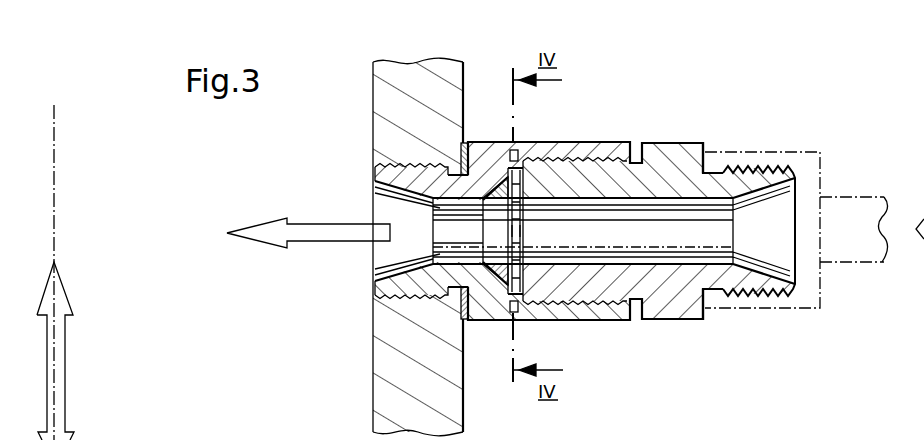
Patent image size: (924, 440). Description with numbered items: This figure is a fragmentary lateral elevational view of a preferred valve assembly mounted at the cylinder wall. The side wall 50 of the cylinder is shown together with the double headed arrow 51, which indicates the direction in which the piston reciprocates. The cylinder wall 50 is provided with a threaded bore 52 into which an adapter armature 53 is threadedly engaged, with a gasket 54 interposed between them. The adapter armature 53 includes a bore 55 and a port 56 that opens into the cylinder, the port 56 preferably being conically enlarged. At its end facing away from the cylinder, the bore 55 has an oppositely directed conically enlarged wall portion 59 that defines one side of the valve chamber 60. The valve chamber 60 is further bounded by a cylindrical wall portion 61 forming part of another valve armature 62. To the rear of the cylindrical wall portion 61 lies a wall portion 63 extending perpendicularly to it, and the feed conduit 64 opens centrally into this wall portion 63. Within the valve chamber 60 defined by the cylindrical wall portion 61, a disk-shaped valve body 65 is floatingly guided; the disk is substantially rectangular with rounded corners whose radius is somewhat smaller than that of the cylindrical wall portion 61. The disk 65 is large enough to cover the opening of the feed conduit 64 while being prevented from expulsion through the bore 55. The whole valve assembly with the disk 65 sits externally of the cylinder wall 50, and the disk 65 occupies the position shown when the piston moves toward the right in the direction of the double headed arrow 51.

The cylinder side wall 50 is at (380, 120).
The double headed arrow 51 is at (54, 370).
The threaded bore 52 is at (383, 318).
The adapter armature 53 is at (600, 313).
The gasket 54 is at (467, 320).
The bore 55 is at (445, 221).
The port 56 is at (430, 243).
The conically enlarged wall portion 59 is at (500, 185).
The valve chamber 60 is at (482, 246).
The cylindrical wall portion 61 is at (518, 158).
The valve armature 62 is at (578, 170).
The wall portion 63 is at (545, 200).
The feed conduit 64 is at (715, 253).
The disk-shaped valve body 65 is at (513, 246).